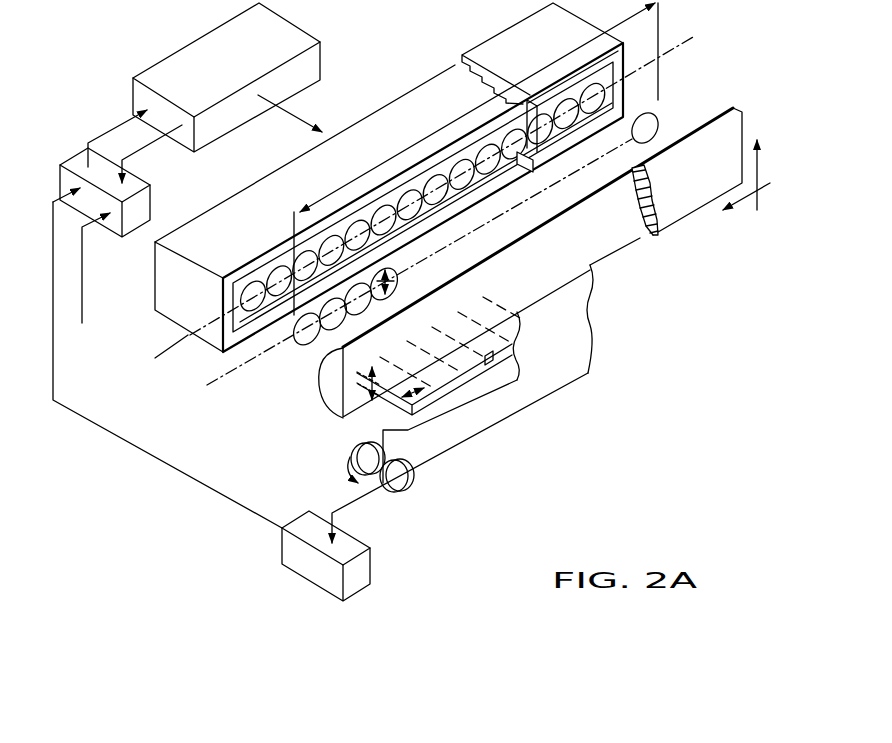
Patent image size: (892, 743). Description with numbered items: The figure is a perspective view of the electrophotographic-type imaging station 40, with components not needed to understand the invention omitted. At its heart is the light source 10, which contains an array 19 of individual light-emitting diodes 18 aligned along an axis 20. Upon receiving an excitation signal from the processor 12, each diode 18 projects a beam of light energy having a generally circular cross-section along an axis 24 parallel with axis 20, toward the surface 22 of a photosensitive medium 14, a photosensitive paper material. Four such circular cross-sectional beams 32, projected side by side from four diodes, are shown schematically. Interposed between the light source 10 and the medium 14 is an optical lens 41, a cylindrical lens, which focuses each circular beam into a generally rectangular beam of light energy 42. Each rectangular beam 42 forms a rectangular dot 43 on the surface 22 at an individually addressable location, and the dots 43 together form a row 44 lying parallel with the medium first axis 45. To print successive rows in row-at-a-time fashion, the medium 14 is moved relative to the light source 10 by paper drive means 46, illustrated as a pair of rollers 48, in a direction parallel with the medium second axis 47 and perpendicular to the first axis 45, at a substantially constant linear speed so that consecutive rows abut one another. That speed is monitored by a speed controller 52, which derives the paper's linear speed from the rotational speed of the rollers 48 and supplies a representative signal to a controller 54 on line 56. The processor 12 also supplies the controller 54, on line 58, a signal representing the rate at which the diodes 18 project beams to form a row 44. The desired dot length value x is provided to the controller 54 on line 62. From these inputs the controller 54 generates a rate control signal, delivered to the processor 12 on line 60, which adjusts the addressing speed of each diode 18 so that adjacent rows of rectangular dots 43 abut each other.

The light source 10 is at (523, 37).
The processor 12 is at (292, 33).
The photosensitive medium 14 is at (590, 313).
The light-emitting diodes 18 is at (437, 192).
The array 19 is at (562, 118).
The axis 20 is at (187, 340).
The surface 22 is at (716, 112).
The axis 24 is at (230, 373).
The circular cross-sectional beams of light energy 32 is at (388, 265).
The electrophotographic-type imaging station 40 is at (428, 33).
The optical lens 41 is at (333, 393).
The rectangular beams of light energy 42 is at (460, 320).
The rectangular dot 43 is at (476, 378).
The row 44 is at (500, 365).
The medium first axis 45 is at (742, 208).
The paper drive means 46 is at (421, 483).
The medium second axis 47 is at (755, 176).
The rollers 48 is at (360, 455).
The speed controller 52 is at (300, 560).
The controller 54 is at (77, 160).
The line 56 is at (156, 459).
The line 58 is at (145, 149).
The line 60 is at (112, 124).
The line 62 is at (84, 265).